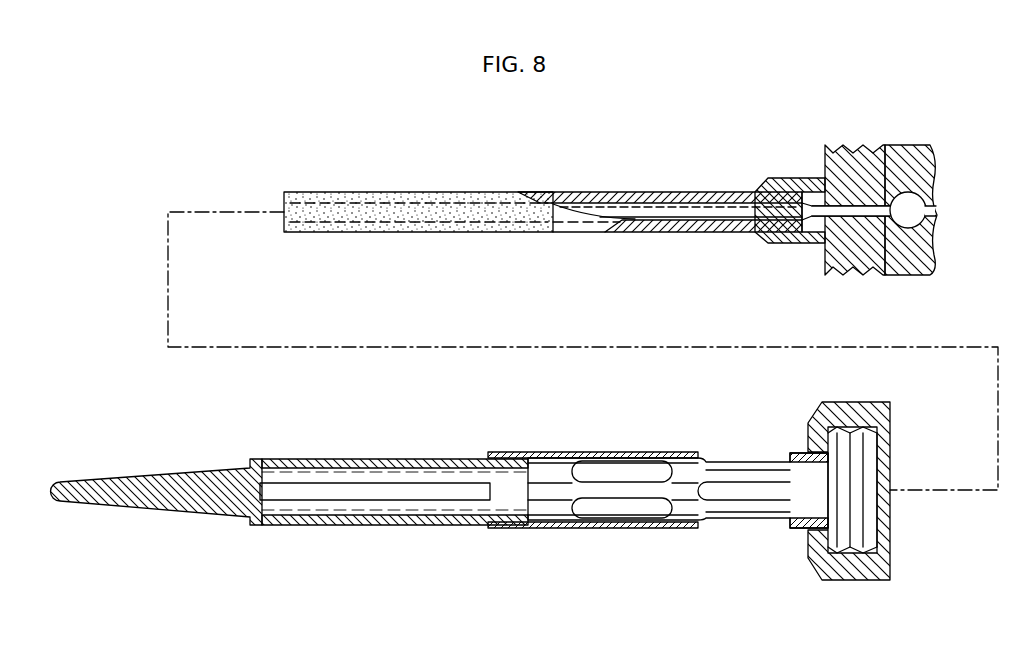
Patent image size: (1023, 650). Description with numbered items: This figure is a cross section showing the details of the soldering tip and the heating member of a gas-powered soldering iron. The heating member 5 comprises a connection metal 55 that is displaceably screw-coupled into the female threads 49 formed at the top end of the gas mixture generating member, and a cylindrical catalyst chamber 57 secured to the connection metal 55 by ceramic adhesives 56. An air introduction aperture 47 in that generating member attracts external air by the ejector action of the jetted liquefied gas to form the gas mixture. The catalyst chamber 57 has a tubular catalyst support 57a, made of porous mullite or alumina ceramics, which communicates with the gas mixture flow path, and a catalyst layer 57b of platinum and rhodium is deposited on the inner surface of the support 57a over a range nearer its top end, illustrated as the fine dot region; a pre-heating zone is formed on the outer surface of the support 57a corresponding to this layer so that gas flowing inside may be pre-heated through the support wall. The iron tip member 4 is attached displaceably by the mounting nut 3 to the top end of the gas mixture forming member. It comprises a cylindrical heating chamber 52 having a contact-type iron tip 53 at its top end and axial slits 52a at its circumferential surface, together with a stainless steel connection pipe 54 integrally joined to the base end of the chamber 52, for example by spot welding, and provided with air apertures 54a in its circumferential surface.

The mounting nut 3 is at (866, 580).
The iron tip member 4 is at (468, 436).
The heating member 5 is at (677, 166).
The air introduction aperture 47 is at (917, 216).
The female threads 49 is at (860, 186).
The cylindrical heating chamber 52 is at (427, 526).
The axial slits 52a is at (300, 488).
The contact-type iron tip 53 is at (132, 478).
The connection pipe 54 is at (556, 454).
The air apertures 54a is at (608, 512).
The connection metal 55 is at (787, 186).
The ceramic adhesives 56 is at (752, 233).
The cylindrical catalyst chamber 57 is at (498, 188).
The tubular catalyst support 57a is at (677, 240).
The catalyst layer 57b is at (421, 233).